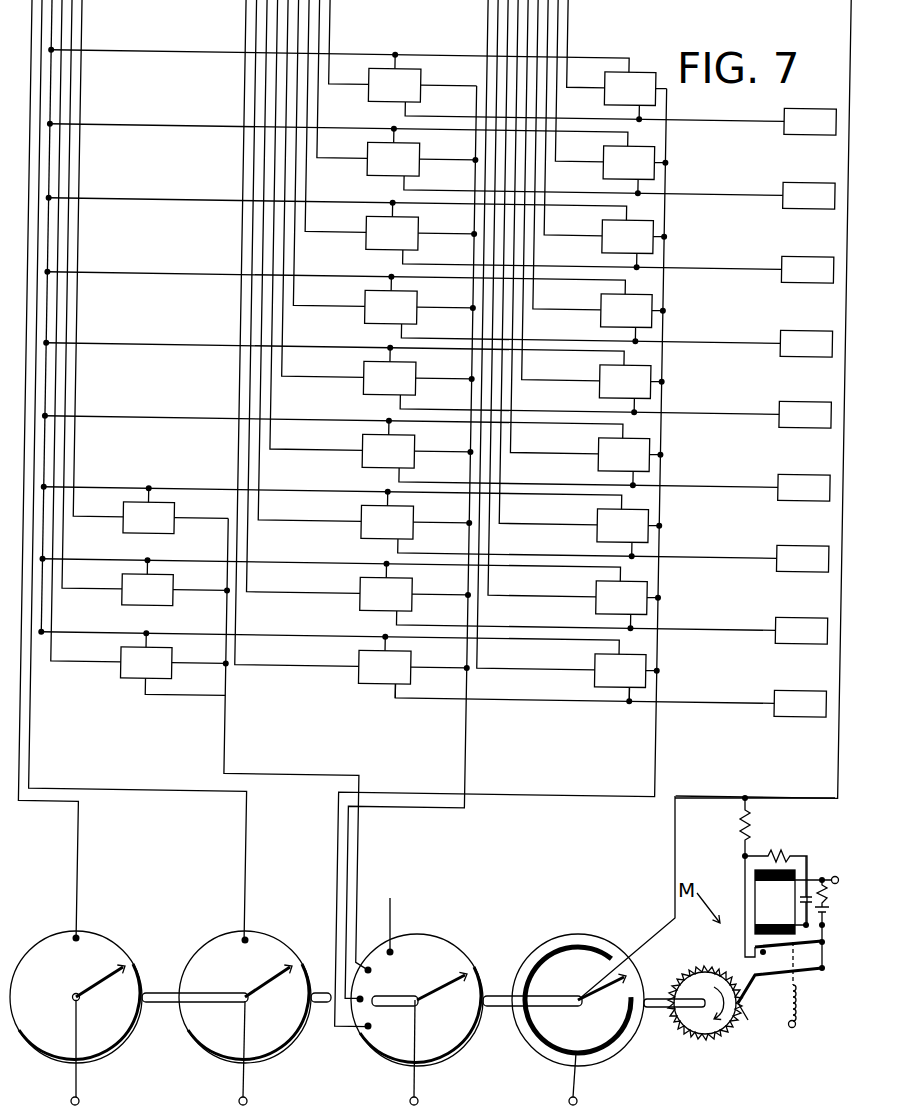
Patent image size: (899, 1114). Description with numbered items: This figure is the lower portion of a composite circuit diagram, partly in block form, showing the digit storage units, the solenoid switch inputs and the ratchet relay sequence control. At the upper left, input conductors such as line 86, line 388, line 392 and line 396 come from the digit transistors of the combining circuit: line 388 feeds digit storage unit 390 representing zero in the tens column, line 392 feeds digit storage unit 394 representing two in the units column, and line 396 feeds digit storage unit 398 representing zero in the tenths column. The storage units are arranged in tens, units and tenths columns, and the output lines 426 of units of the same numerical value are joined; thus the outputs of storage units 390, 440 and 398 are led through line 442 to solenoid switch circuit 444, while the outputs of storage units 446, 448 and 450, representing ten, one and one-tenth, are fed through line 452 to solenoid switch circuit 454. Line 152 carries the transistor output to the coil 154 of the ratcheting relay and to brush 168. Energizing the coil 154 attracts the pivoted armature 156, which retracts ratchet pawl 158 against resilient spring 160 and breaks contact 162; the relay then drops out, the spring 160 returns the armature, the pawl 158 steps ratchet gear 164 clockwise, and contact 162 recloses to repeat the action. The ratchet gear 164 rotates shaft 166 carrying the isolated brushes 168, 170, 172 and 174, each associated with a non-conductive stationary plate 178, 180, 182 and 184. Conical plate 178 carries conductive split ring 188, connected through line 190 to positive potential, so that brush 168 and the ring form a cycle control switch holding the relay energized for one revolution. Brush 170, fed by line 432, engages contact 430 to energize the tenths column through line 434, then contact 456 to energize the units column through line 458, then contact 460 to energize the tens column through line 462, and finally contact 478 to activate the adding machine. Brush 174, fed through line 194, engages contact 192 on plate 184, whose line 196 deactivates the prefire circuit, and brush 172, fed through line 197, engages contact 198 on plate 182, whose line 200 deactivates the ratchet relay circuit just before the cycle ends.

The conductor 86 is at (53, 32).
The line 388 is at (64, 91).
The line 392 is at (258, 29).
The line 396 is at (489, 33).
The line 152 is at (850, 76).
The digit storage unit 394 is at (387, 522).
The storage unit 448 is at (386, 594).
The storage unit 440 is at (384, 667).
The storage unit 446 is at (148, 590).
The digit storage unit 390 is at (147, 663).
The storage unit 450 is at (622, 598).
The digit storage unit 398 is at (620, 671).
The solenoid switch circuit 454 is at (801, 630).
The solenoid switch circuit 444 is at (800, 703).
The line 452 is at (746, 613).
The line 442 is at (747, 686).
The output line 426 is at (170, 681).
The line 200 is at (115, 788).
The line 196 is at (77, 804).
The line 462 is at (271, 776).
The line 458 is at (414, 804).
The line 434 is at (544, 789).
The stationary contact plate 184 is at (76, 997).
The contact 192 is at (72, 935).
The electrical contact brush 174 is at (123, 958).
The line 194 is at (77, 1085).
The shaft 166 is at (158, 1003).
The stationary contact plate 182 is at (245, 997).
The contact 198 is at (243, 938).
The electrical contact brush 172 is at (288, 962).
The line 197 is at (245, 1085).
The stationary contact plate 180 is at (417, 1000).
The contact 478 is at (393, 950).
The contact 460 is at (373, 968).
The contact 456 is at (363, 998).
The contact 430 is at (367, 1028).
The electrical contact brush 170 is at (460, 967).
The line 432 is at (416, 1090).
The contact plate 178 is at (578, 1000).
The split ring 188 is at (573, 947).
The electrical contact brush 168 is at (625, 978).
The line 190 is at (577, 1093).
The ratchet gear 164 is at (705, 1003).
The ratchet pawl 158 is at (742, 1012).
The contact 162 is at (763, 952).
The pivoted armature 156 is at (802, 944).
The resilient spring 160 is at (799, 1008).
The coil 154 is at (757, 881).